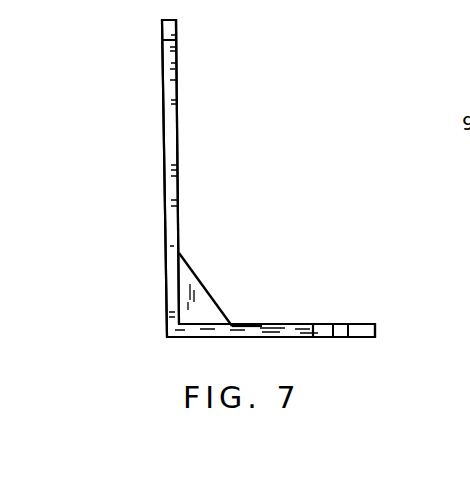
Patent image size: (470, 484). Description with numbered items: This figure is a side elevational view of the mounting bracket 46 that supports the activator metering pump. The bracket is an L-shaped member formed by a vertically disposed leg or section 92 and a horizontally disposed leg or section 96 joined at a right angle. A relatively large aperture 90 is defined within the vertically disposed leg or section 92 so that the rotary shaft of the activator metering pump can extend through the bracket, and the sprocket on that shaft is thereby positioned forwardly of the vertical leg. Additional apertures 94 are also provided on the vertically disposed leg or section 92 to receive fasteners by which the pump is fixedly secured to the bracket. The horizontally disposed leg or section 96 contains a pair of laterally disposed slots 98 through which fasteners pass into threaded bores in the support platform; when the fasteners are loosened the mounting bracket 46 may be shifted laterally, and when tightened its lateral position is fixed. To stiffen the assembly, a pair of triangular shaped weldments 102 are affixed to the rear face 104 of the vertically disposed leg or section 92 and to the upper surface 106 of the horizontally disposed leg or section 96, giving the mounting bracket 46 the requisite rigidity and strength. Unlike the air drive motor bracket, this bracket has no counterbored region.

The mounting bracket 46 is at (162, 62).
The aperture 90 is at (163, 150).
The vertically disposed leg or section 92 is at (177, 245).
The apertures 94 is at (178, 102).
The horizontally disposed leg or section 96 is at (315, 324).
The laterally disposed slots 98 is at (262, 323).
The triangular shaped weldments 102 is at (177, 307).
The rear face 104 is at (180, 232).
The upper surface 106 is at (252, 324).